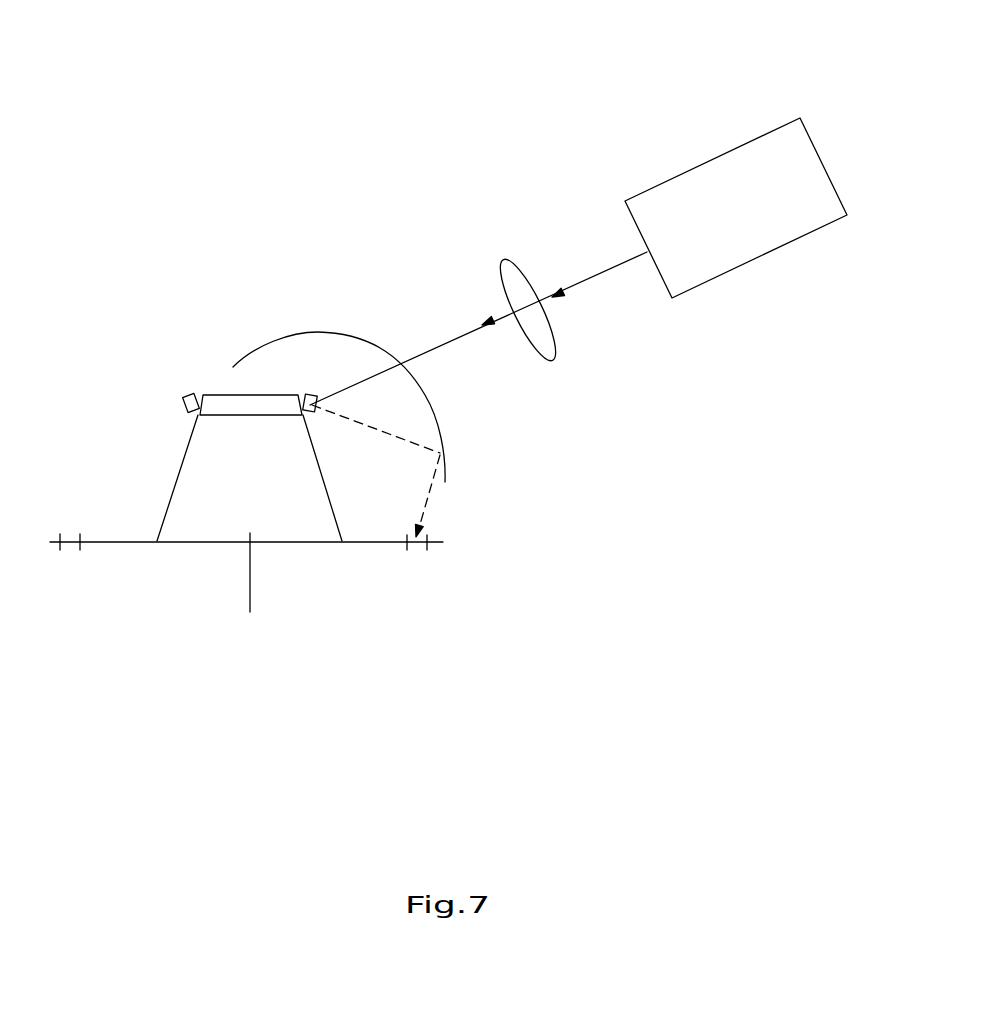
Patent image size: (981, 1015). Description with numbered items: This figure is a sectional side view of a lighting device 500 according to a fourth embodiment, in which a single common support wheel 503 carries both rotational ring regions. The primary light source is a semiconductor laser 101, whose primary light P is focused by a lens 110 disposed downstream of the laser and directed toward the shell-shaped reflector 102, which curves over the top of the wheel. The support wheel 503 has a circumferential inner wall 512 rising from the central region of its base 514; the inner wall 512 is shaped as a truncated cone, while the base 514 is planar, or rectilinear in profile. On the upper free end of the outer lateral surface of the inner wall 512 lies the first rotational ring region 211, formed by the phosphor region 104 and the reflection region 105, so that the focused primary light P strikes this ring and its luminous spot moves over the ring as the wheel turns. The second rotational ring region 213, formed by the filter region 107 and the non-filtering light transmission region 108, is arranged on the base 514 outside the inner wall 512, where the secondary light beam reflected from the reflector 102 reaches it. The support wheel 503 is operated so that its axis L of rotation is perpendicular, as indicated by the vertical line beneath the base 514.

The lighting device 500 is at (370, 133).
The semiconductor laser 101 is at (737, 187).
The lens 110 is at (515, 272).
The primary light P is at (604, 270).
The shell-shaped reflector 102 is at (318, 332).
The first rotational ring region 211 is at (213, 405).
The phosphor region 104 is at (304, 406).
The reflection region 105 is at (187, 400).
The circumferential inner wall 512 is at (183, 460).
The base 514 is at (311, 545).
The common support wheel 503 is at (160, 600).
The second rotational ring region 213 is at (238, 587).
The filter region 107 is at (413, 547).
The non-filtering light transmission region 108 is at (68, 547).
The axis of rotation L is at (250, 583).